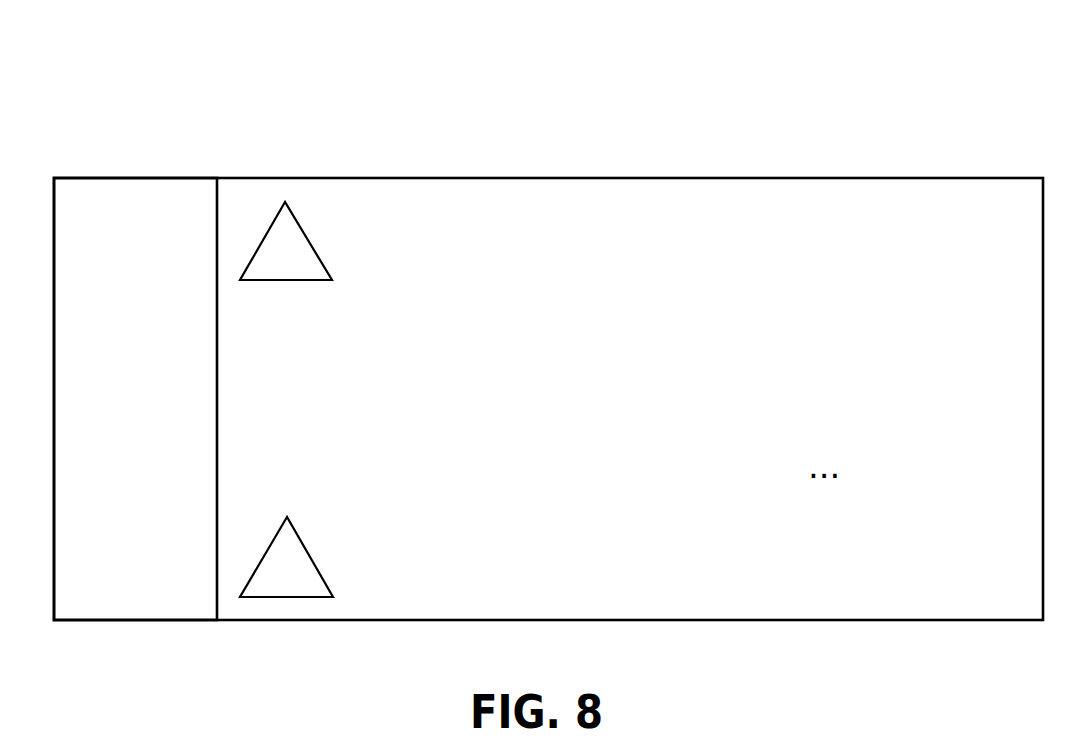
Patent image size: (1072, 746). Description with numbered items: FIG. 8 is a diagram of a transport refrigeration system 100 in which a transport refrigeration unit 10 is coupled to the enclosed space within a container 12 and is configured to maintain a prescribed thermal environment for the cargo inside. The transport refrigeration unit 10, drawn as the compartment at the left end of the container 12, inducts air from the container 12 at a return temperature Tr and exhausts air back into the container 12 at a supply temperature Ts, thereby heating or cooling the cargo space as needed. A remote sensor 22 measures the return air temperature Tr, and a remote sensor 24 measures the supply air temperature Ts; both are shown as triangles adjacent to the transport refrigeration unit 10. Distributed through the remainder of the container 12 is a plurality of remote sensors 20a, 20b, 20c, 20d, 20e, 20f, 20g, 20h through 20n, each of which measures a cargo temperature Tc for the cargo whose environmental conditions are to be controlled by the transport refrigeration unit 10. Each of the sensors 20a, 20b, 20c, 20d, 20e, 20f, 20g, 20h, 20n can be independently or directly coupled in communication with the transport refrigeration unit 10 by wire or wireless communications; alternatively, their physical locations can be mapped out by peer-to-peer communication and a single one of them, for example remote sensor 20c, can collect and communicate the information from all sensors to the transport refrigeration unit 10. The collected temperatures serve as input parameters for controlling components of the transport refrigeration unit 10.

The transport refrigeration system 100 is at (570, 52).
The transport refrigeration unit 10 is at (135, 399).
The container 12 is at (923, 178).
The remote sensor 22 is at (301, 241).
The remote sensor 24 is at (295, 557).
The remote sensor 20a is at (497, 282).
The remote sensor 20b is at (497, 406).
The remote sensor 20c is at (497, 519).
The remote sensor 20d is at (693, 282).
The remote sensor 20e is at (693, 406).
The remote sensor 20f is at (693, 519).
The remote sensor 20g is at (908, 282).
The remote sensor 20h is at (908, 404).
The remote sensor 20n is at (908, 519).